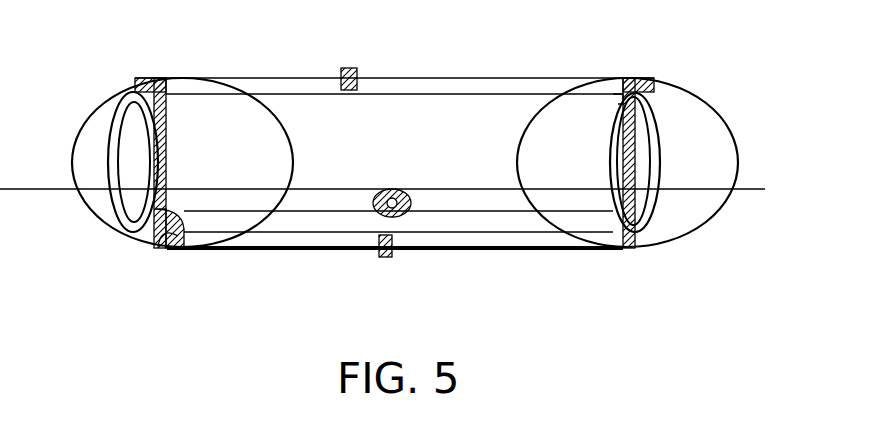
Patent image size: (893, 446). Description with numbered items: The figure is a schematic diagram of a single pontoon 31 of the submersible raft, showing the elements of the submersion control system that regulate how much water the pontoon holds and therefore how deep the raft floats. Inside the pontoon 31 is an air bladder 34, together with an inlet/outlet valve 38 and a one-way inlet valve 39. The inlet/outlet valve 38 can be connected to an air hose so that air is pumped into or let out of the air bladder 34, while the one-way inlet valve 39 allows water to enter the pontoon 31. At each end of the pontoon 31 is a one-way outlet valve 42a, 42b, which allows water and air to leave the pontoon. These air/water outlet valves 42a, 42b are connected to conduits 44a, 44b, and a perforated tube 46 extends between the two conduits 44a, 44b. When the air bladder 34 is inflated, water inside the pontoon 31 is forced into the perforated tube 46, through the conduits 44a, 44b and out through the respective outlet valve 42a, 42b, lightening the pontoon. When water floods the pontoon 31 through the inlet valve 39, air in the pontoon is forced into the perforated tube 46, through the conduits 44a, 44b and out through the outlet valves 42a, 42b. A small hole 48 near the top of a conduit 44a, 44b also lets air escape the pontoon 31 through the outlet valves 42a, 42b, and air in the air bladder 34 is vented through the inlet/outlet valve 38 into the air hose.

The pontoon 31 is at (700, 228).
The air bladder 34 is at (200, 168).
The inlet/outlet valve 38 is at (348, 67).
The one-way inlet valve 39 is at (410, 218).
The one-way outlet valve 42a is at (152, 78).
The one-way outlet valve 42b is at (638, 77).
The conduit 44a is at (150, 163).
The conduit 44b is at (638, 167).
The perforated tube 46 is at (292, 250).
The small hole 48 is at (618, 92).